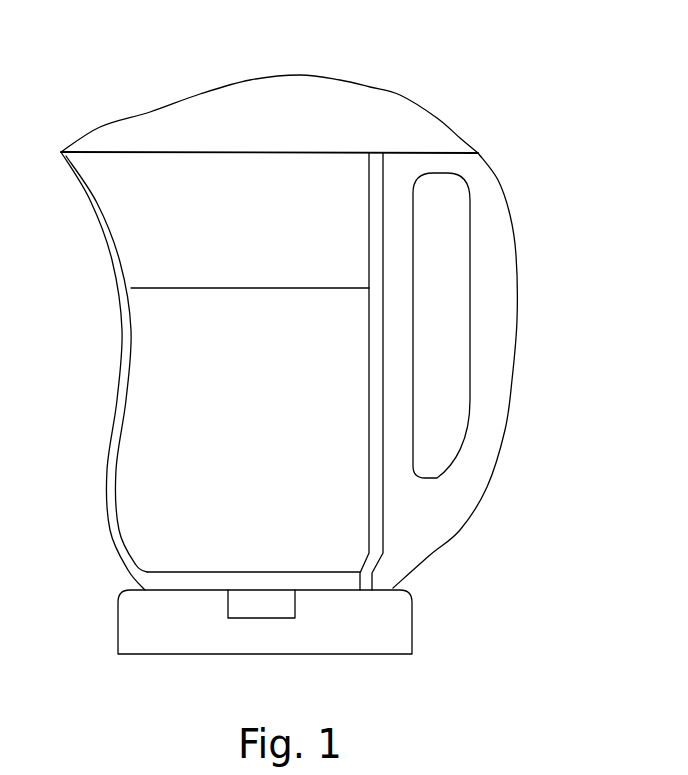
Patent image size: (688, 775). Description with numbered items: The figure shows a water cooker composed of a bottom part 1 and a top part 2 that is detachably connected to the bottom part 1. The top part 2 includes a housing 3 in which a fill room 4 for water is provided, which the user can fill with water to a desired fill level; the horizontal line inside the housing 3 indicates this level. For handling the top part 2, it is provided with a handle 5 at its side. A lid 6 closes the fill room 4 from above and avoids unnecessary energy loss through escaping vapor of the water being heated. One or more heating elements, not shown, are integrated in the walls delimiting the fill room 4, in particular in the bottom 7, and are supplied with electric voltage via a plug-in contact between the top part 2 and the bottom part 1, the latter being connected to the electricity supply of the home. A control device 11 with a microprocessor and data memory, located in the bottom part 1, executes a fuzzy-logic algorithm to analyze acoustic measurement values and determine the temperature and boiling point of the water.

The bottom part 1 is at (395, 615).
The top part 2 is at (150, 367).
The housing 3 is at (377, 173).
The fill room 4 is at (232, 288).
The handle 5 is at (495, 250).
The lid 6 is at (403, 122).
The bottom 7 is at (203, 578).
The control device 11 is at (275, 605).